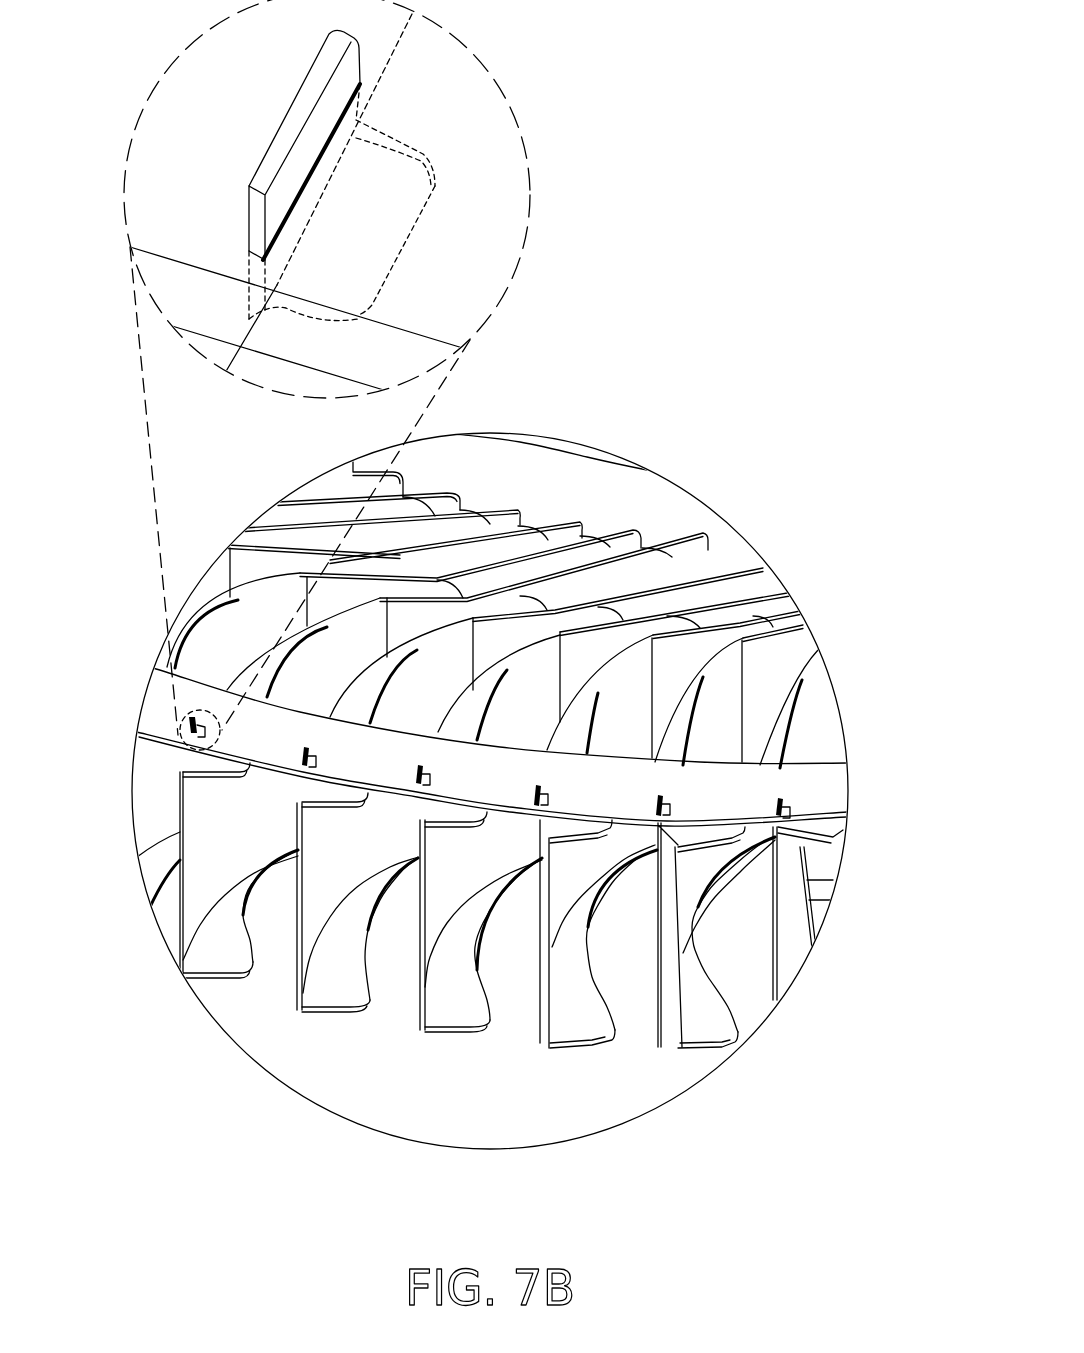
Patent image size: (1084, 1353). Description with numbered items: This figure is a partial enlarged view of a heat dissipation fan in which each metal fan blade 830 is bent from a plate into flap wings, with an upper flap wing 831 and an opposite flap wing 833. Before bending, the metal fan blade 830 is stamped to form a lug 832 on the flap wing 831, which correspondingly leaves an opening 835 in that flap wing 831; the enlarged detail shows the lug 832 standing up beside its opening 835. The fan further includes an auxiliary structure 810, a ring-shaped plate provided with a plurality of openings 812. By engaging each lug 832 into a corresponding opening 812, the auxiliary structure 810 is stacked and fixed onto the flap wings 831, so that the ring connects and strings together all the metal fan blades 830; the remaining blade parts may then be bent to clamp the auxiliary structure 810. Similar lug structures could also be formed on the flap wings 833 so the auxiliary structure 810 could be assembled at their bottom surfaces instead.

The auxiliary structure 810 is at (826, 787).
The openings 812 is at (320, 167).
The metal fan blade 830 is at (490, 989).
The flap wing 831 is at (683, 735).
The lug 832 is at (286, 127).
The flap wing 833 is at (350, 990).
The opening 835 is at (412, 244).